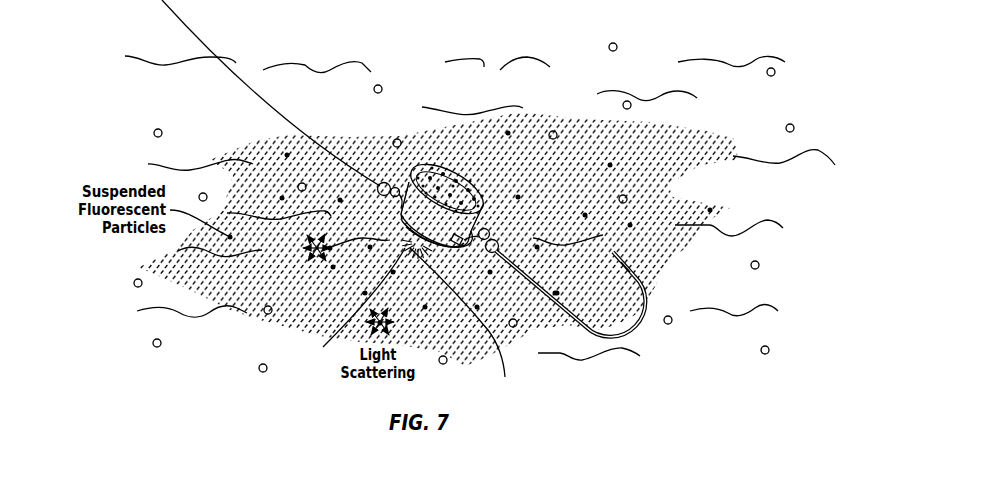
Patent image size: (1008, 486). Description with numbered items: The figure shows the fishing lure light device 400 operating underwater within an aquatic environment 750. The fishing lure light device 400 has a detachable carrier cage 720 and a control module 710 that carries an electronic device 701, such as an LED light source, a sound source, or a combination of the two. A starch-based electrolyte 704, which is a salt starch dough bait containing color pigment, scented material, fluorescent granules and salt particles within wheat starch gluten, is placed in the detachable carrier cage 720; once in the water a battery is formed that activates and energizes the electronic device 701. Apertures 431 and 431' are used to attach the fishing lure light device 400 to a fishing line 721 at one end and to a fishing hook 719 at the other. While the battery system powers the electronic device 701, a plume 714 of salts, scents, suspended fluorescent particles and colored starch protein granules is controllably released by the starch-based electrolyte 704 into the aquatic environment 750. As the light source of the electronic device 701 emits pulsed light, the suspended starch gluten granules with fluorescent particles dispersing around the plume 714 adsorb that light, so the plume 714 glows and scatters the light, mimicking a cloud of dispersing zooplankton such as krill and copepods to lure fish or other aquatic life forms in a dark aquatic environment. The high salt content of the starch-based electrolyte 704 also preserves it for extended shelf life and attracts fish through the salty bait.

The fishing line 721 is at (240, 77).
The aperture 431 is at (377, 162).
The aperture 431' is at (485, 263).
The starch-based electrolyte 704 is at (430, 166).
The fishing lure light device 400 is at (488, 185).
The detachable carrier cage 720 is at (472, 216).
The plume 714 is at (658, 153).
The fishing hook 719 is at (643, 317).
The electronic device 701 is at (349, 303).
The control module 710 is at (463, 320).
The aquatic environment 750 is at (249, 339).